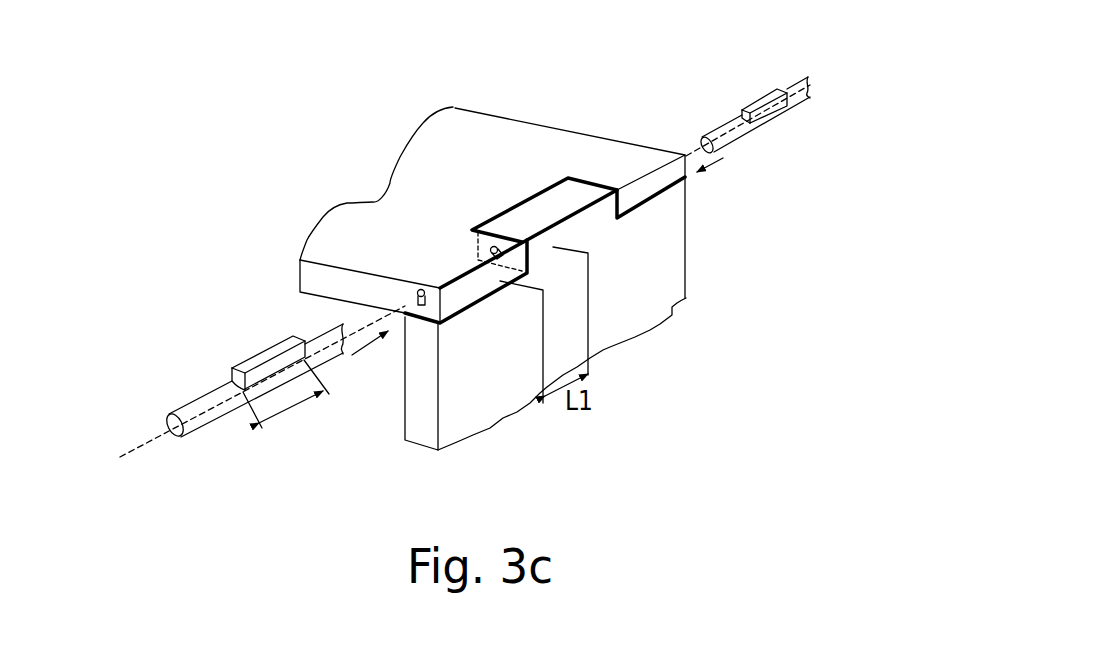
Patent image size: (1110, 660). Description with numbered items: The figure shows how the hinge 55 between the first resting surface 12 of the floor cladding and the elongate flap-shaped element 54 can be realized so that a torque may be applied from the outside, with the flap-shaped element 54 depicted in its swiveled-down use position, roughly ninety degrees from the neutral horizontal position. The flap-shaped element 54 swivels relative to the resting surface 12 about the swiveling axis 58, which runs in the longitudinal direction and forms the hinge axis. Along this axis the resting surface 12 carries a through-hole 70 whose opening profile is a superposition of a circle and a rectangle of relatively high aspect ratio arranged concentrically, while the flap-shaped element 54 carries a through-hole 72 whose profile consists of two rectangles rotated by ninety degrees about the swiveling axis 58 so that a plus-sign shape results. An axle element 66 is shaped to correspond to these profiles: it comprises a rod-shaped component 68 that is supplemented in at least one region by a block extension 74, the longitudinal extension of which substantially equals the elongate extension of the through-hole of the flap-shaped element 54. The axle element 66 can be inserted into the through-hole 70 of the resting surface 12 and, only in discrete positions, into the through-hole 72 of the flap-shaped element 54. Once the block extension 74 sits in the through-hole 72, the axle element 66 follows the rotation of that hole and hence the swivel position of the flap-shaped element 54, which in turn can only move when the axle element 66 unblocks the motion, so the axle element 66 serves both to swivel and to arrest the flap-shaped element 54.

The first resting surface 12 is at (473, 142).
The flap-shaped element 54 is at (678, 261).
The hinge 55 is at (593, 113).
The swiveling axis 58 is at (132, 453).
The axle element 66 is at (466, 222).
The rod-shaped component 68 is at (193, 410).
The through-hole 70 is at (420, 288).
The through-hole 72 is at (488, 237).
The block extension 74 is at (296, 344).